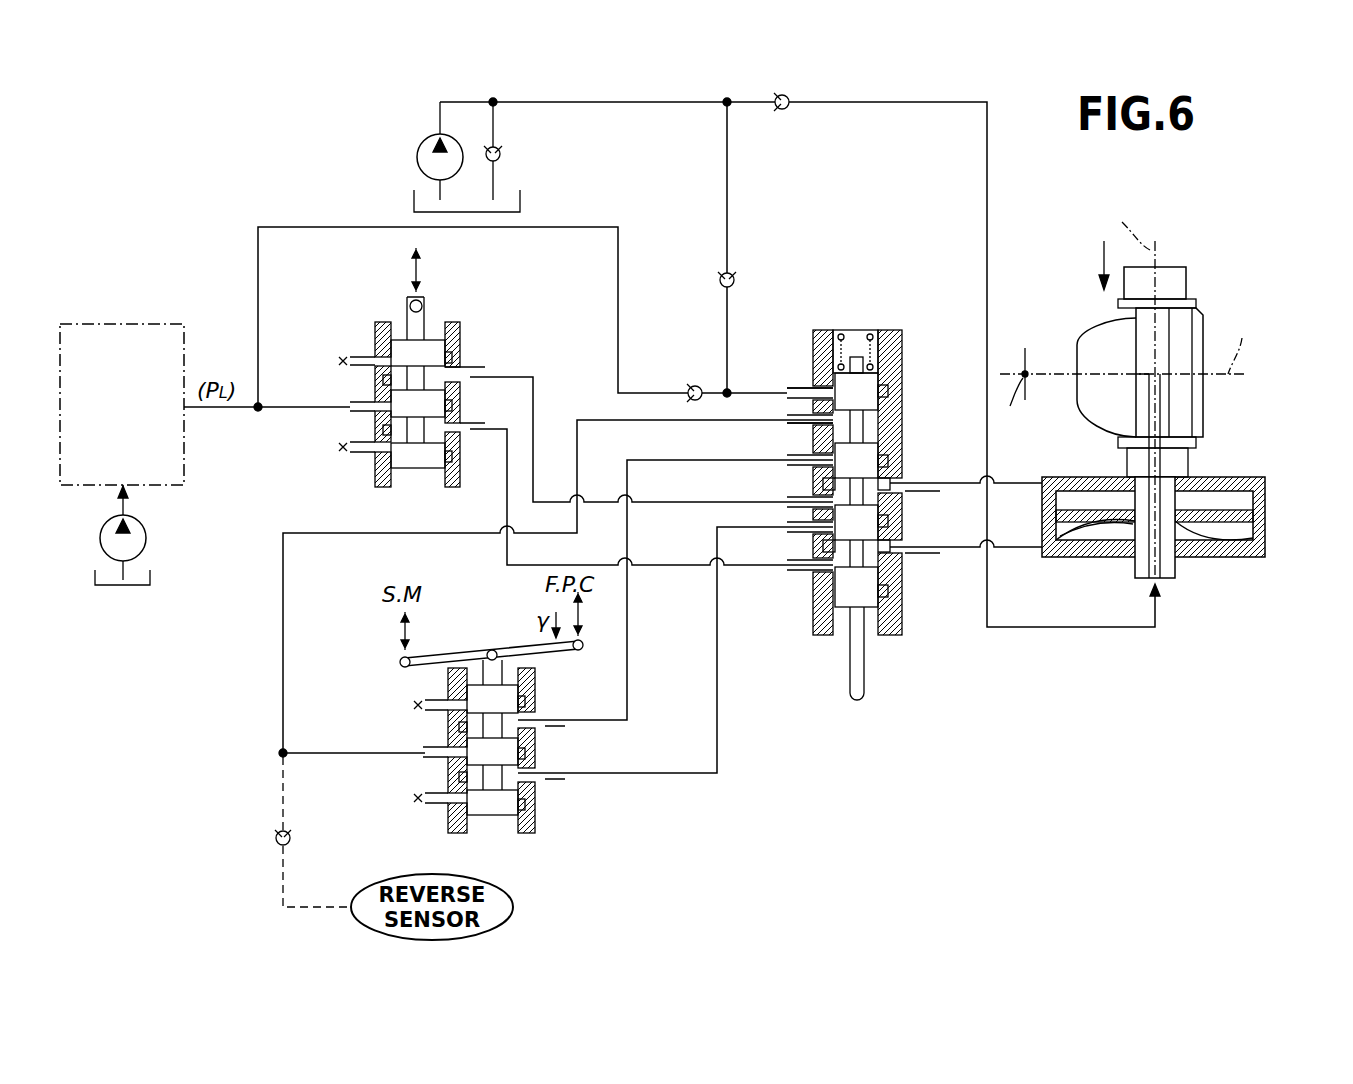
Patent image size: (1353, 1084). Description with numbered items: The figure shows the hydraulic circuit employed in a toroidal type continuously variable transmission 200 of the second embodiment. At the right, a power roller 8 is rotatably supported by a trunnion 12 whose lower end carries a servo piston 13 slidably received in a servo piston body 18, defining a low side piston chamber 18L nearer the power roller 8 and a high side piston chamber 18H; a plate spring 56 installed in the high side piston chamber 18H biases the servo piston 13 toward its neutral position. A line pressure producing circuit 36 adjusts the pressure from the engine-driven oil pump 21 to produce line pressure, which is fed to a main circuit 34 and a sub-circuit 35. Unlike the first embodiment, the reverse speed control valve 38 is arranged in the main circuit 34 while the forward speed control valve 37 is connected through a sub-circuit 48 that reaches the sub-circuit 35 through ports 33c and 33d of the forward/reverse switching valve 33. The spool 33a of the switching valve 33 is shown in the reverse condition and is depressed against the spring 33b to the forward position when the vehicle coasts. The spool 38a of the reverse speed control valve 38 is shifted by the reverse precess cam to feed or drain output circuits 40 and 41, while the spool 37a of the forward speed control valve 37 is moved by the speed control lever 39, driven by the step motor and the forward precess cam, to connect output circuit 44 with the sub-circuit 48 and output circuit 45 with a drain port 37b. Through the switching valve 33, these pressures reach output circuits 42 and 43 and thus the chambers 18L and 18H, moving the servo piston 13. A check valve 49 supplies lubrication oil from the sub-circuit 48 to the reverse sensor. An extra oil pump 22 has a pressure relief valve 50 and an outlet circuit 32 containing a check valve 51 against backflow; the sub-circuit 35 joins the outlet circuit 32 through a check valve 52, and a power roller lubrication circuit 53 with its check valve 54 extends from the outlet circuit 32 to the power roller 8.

The toroidal type continuously variable transmission 200 is at (1264, 180).
The power roller 8 is at (1090, 324).
The trunnion 12 is at (1172, 270).
The servo piston 13 is at (1252, 519).
The servo piston body 18 is at (1240, 556).
The low side piston chamber 18L is at (1242, 501).
The high side piston chamber 18H is at (1250, 534).
The plate spring 56 is at (1232, 532).
The oil pump 21 is at (146, 540).
The extra oil pump 22 is at (417, 158).
The outlet circuit 32 is at (727, 168).
The forward/reverse switching valve 33 is at (874, 498).
The spool 33a is at (864, 380).
The spring 33b is at (853, 330).
The port 33c is at (812, 391).
The port 33d is at (815, 422).
The main circuit 34 is at (296, 410).
The sub-circuit 35 is at (258, 300).
The line pressure producing circuit 36 is at (140, 322).
The forward speed control valve 37 is at (455, 766).
The spool 37a is at (508, 698).
The drain port 37b is at (440, 796).
The reverse speed control valve 38 is at (394, 386).
The spool 38a is at (442, 355).
The speed control lever 39 is at (520, 649).
The output circuit 40 is at (485, 373).
The output circuit 41 is at (508, 432).
The output circuit 42 is at (952, 482).
The output circuit 43 is at (945, 553).
The output circuit 44 is at (570, 728).
The output circuit 45 is at (580, 781).
The sub-circuit 48 is at (283, 716).
The check valve 49 is at (275, 833).
The pressure relief valve 50 is at (506, 152).
The check valve 51 is at (742, 277).
The check valve 52 is at (694, 385).
The power roller lubrication circuit 53 is at (912, 104).
The check valve 54 is at (785, 112).